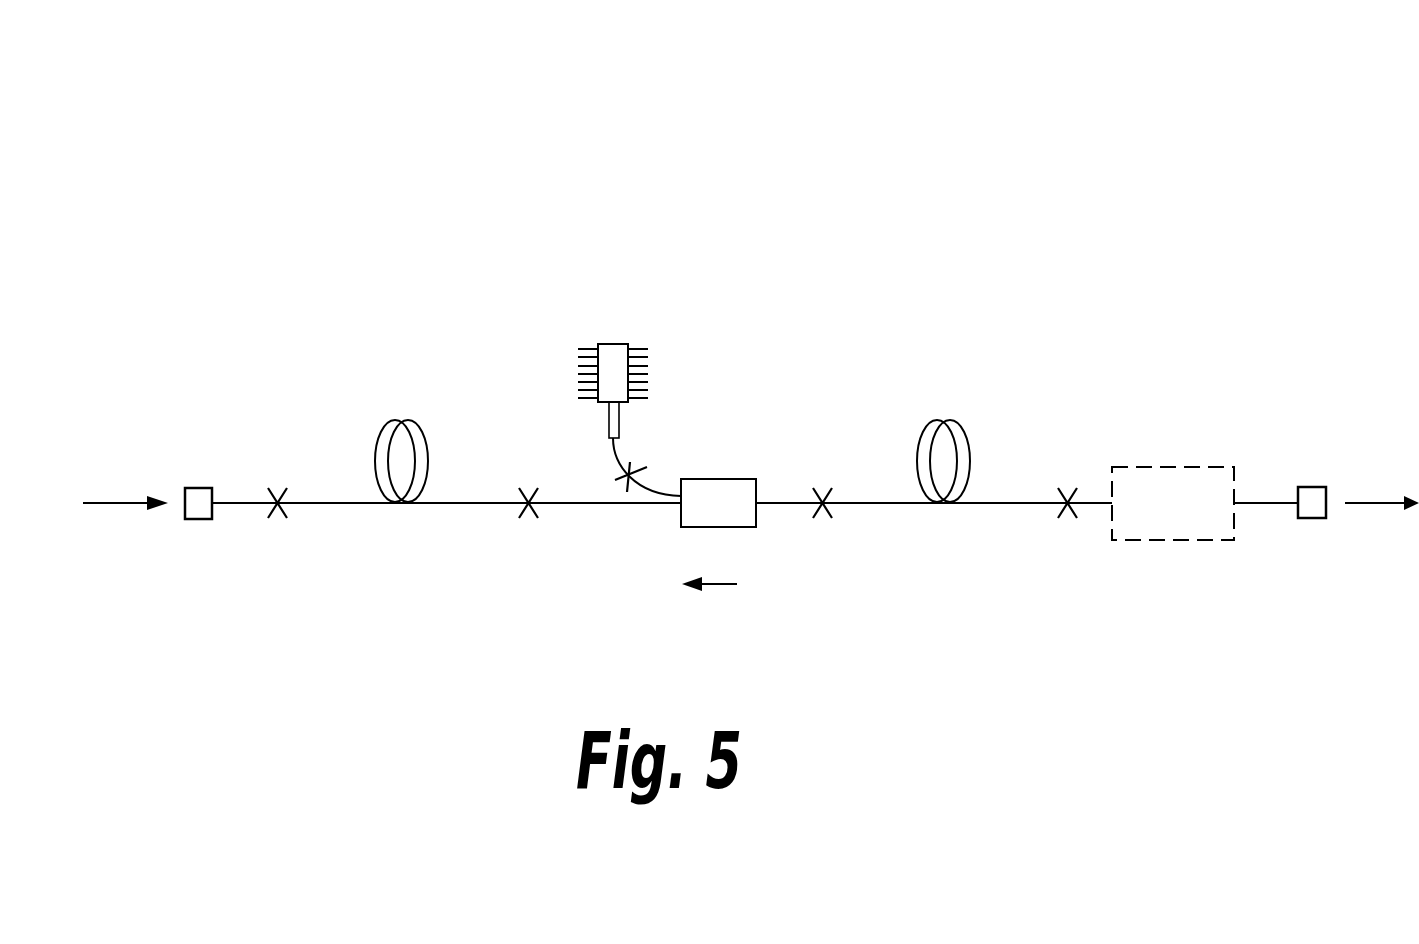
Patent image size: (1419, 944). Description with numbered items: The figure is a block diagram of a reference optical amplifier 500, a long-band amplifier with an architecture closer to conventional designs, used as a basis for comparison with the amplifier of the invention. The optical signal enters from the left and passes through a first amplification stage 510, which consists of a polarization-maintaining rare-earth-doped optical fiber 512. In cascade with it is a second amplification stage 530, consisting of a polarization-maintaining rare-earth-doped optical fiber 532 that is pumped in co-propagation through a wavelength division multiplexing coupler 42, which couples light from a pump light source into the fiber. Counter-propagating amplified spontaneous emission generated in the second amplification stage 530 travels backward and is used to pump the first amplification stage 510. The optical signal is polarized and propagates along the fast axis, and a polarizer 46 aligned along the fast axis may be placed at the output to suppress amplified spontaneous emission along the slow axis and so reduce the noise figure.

The reference optical amplifier 500 is at (1142, 187).
The first amplification stage 510 is at (380, 512).
The polarization-maintaining rare-earth-doped optical fiber 512 is at (393, 420).
The polarizer 46 is at (612, 343).
The wavelength division multiplexing coupler 42 is at (712, 479).
The second amplification stage 530 is at (932, 514).
The polarization-maintaining rare-earth-doped optical fiber 532 is at (934, 420).